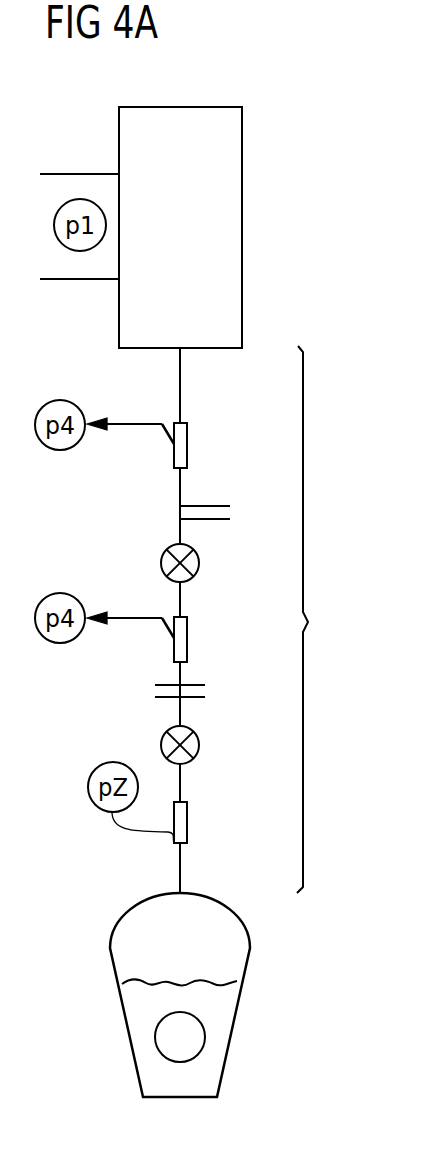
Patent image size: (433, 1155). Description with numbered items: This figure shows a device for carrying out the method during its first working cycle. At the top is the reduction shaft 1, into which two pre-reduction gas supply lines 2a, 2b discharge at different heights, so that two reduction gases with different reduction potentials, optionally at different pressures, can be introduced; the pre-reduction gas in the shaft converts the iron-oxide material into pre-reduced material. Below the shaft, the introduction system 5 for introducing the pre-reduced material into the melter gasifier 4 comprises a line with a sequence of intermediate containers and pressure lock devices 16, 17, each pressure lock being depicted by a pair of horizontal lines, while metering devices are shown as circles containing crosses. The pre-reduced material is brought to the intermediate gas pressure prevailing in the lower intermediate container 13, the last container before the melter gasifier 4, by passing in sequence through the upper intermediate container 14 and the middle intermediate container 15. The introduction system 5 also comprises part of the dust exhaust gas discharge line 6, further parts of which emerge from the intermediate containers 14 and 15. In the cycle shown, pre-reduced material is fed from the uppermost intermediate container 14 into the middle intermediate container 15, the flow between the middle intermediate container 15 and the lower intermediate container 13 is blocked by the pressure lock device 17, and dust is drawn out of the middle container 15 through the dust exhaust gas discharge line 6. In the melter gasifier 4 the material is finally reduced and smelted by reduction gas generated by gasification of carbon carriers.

The reduction shaft 1 is at (210, 106).
The pre-reduction gas supply line 2a is at (80, 283).
The pre-reduction gas supply line 2b is at (80, 172).
The melter gasifier 4 is at (231, 1037).
The introduction system 5 is at (313, 619).
The dust exhaust gas discharge line 6 is at (183, 387).
The lower intermediate container 13 is at (188, 823).
The upper intermediate container 14 is at (188, 447).
The middle intermediate container 15 is at (188, 640).
The pressure lock device 16 is at (222, 512).
The pressure lock device 17 is at (197, 692).